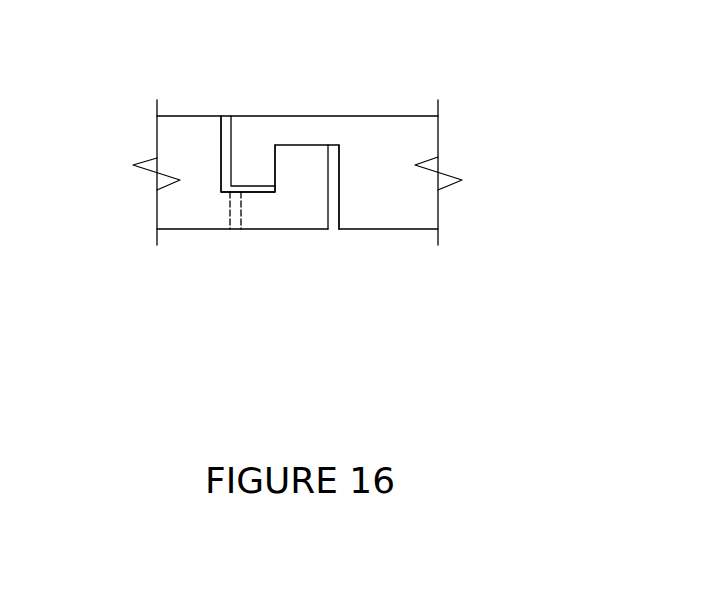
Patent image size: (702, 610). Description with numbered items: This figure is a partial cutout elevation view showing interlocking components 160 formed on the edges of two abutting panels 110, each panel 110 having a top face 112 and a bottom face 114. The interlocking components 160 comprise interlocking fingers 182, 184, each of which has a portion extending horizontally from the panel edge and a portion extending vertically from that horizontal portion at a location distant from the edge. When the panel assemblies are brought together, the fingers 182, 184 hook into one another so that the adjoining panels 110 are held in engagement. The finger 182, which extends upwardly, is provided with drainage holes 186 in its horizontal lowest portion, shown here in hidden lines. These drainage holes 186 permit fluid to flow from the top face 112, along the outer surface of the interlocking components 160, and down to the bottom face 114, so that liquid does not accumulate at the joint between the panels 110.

The panel 110 is at (187, 203).
The top face 112 is at (187, 116).
The bottom face 114 is at (382, 229).
The interlocking components 160 is at (279, 254).
The interlocking finger 182 is at (317, 210).
The interlocking finger 184 is at (258, 138).
The drainage holes 186 is at (230, 208).